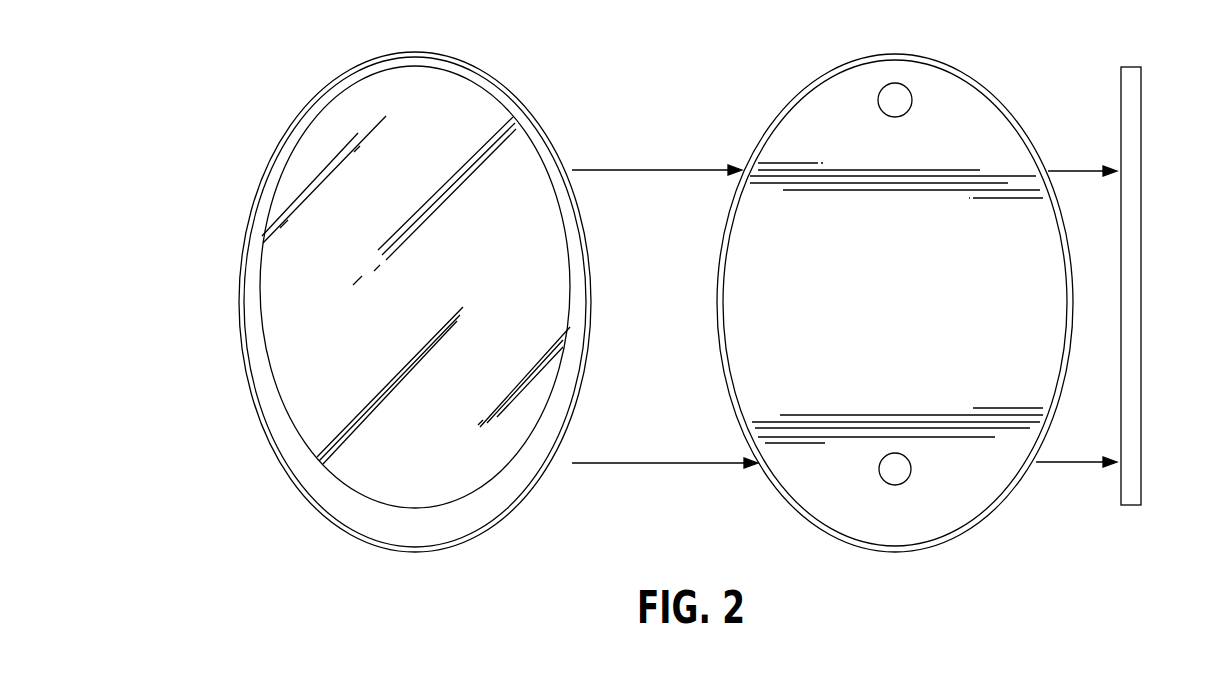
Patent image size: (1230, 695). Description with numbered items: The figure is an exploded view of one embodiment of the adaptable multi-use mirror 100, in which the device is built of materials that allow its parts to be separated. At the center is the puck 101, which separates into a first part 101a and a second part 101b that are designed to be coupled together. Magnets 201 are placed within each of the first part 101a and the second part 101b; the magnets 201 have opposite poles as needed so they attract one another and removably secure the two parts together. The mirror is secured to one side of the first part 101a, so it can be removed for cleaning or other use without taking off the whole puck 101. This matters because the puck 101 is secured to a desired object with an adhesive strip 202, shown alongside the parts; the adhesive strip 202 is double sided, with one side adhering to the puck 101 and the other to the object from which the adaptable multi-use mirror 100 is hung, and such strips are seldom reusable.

The adaptable multi-use mirror 100 is at (700, 47).
The puck 101 is at (700, 253).
The first part 101a is at (430, 553).
The second part 101b is at (905, 553).
The magnets 201 is at (898, 83).
The adhesive strip 202 is at (1141, 284).